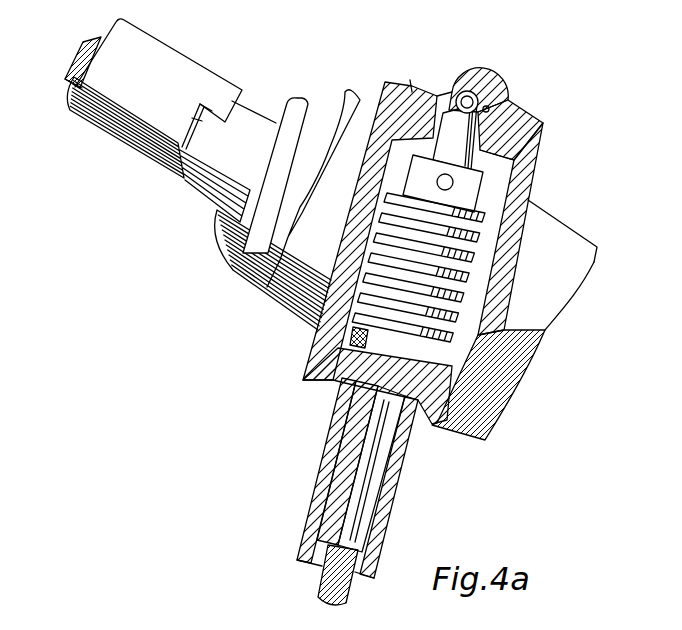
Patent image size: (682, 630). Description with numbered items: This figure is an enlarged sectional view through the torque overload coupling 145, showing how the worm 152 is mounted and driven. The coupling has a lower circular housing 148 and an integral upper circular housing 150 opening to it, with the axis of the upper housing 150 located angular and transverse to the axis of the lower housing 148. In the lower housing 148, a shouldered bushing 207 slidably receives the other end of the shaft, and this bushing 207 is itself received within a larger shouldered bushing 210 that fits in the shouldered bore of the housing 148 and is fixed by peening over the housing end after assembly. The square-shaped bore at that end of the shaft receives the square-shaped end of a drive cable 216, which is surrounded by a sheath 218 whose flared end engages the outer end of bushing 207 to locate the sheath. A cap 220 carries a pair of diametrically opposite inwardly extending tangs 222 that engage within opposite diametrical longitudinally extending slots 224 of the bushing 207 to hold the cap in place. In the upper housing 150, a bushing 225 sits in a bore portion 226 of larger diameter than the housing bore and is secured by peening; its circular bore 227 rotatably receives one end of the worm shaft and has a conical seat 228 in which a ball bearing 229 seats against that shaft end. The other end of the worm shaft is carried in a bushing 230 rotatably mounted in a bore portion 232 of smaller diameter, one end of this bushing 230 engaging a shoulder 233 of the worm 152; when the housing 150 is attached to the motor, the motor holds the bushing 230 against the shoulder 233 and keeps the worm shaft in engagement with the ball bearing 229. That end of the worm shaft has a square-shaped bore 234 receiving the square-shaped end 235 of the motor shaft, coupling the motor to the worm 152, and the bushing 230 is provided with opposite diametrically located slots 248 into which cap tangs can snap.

The torque overload coupling 145 is at (589, 231).
The lower circular housing 148 is at (432, 276).
The upper circular housing 150 is at (508, 376).
The worm 152 is at (508, 229).
The shouldered bushing 207 is at (177, 83).
The larger shouldered bushing 210 is at (301, 169).
The drive cable 216 is at (63, 49).
The sheath 218 is at (54, 113).
The cap 220 is at (120, 130).
The tangs 222 is at (174, 117).
The slots 224 is at (209, 189).
The bushing 225 is at (538, 171).
The bore portion 226 is at (542, 131).
The circular bore 227 is at (524, 102).
The conical seat 228 is at (511, 85).
The ball bearing 229 is at (464, 76).
The bushing 230 is at (317, 463).
The bore portion 232 is at (361, 386).
The shoulder 233 is at (317, 343).
The square-shaped bore 234 is at (402, 469).
The square-shaped end of the motor shaft 235 is at (297, 575).
The slots 248 is at (350, 478).